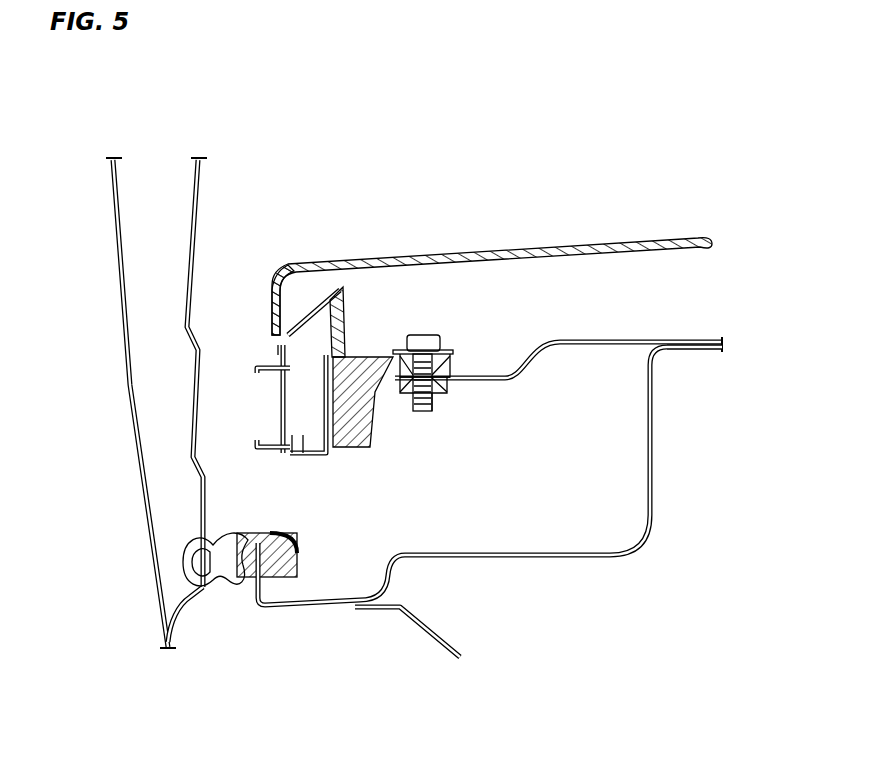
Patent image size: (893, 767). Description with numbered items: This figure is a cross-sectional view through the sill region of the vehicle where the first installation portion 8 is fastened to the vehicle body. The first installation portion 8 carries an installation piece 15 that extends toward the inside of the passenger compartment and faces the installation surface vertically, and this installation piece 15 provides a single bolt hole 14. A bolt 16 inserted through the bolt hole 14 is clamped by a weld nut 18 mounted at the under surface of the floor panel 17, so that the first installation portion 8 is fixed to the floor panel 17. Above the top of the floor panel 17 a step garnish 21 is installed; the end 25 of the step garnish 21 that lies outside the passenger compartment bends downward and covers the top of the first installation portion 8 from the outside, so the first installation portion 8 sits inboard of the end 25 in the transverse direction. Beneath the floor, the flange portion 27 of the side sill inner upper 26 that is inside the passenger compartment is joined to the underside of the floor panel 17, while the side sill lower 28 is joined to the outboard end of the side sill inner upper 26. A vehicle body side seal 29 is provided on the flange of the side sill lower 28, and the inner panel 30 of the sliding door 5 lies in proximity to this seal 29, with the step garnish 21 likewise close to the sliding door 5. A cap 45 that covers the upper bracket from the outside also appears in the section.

The sliding door 5 is at (130, 425).
The inner panel 30 is at (200, 396).
The vehicle body side seal 29 is at (262, 533).
The step garnish 21 is at (522, 247).
The end of the step garnish 25 is at (268, 313).
The cap 45 is at (345, 302).
The first installation portion 8 is at (370, 452).
The floor panel 17 is at (633, 340).
The bolt 16 is at (420, 335).
The installation piece 15 is at (453, 378).
The bolt hole 14 is at (430, 368).
The weld nut 18 is at (440, 397).
The flange portion 27 is at (712, 352).
The side sill inner upper 26 is at (651, 470).
The side sill lower 28 is at (398, 617).